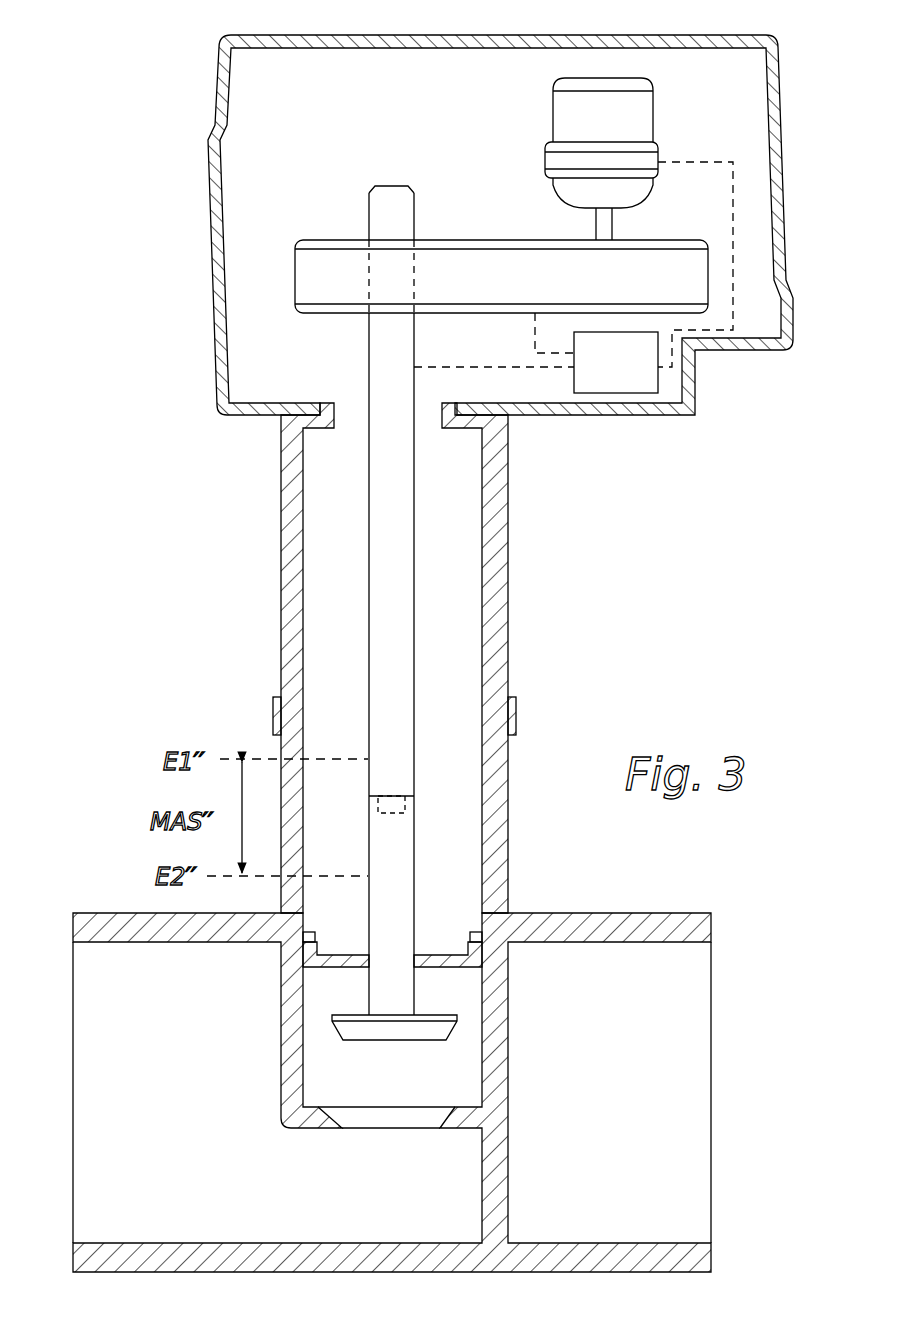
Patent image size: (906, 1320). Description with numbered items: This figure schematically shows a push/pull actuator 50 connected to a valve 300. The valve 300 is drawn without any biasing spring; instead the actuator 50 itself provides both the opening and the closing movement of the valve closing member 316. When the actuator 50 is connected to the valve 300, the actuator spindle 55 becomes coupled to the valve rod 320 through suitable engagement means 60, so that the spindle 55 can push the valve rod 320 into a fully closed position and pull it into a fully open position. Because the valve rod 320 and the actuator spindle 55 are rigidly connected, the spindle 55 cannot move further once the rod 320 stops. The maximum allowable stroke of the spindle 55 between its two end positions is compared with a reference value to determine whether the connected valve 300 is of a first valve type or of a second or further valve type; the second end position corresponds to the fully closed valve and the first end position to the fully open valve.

The push/pull actuator 50 is at (166, 98).
The actuator spindle 55 is at (382, 632).
The engagement means 60 is at (393, 813).
The valve 300 is at (110, 846).
The valve closing member 316 is at (445, 920).
The valve rod 320 is at (382, 1006).